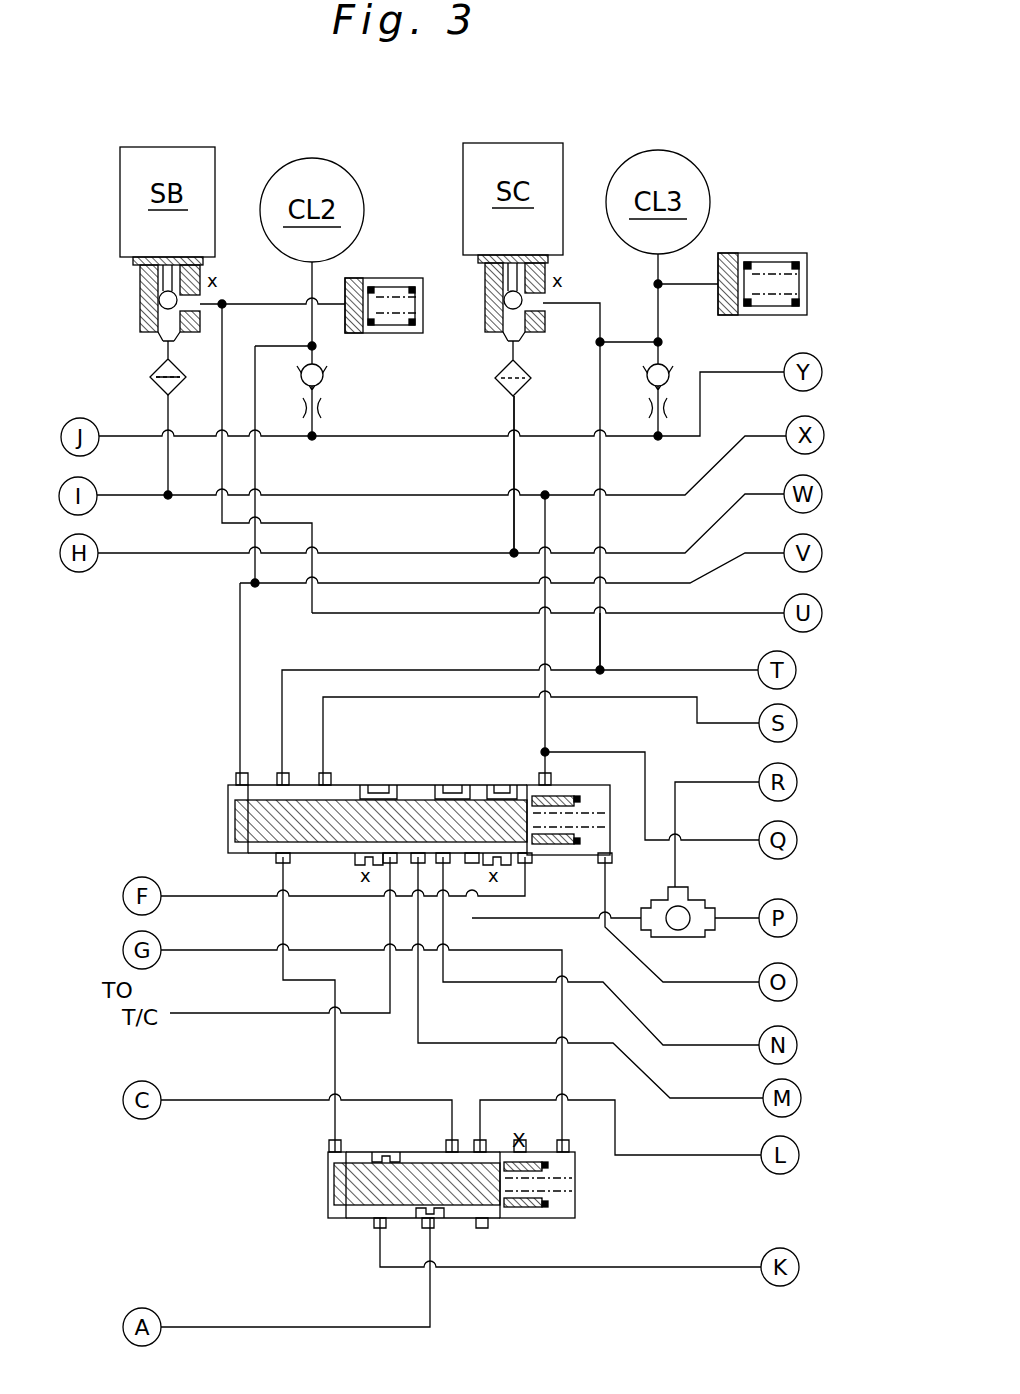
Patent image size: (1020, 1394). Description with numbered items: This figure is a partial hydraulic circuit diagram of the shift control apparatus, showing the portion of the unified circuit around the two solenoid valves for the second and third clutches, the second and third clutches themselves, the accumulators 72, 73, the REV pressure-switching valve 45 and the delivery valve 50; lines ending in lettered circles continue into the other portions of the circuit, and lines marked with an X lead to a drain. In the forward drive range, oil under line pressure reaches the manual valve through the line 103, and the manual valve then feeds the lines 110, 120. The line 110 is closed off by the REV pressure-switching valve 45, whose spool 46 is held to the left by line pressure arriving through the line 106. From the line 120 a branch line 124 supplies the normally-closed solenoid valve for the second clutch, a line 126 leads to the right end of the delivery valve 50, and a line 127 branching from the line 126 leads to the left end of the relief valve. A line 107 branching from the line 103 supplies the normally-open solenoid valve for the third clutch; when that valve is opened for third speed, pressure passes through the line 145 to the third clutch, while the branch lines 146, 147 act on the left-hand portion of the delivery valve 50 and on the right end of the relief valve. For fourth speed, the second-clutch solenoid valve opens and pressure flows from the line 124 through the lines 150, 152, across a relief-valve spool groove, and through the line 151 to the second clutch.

The REV pressure-switching valve 45 is at (495, 1200).
The spool 46 is at (482, 1207).
The delivery valve 50 is at (210, 812).
The accumulator 72 is at (389, 278).
The accumulator 73 is at (771, 253).
The line 103 is at (368, 552).
The line 106 is at (202, 952).
The line 107 is at (515, 462).
The line 110 is at (671, 1153).
The line 120 is at (357, 493).
The line 124 is at (165, 412).
The line 126 is at (545, 732).
The line 127 is at (608, 750).
The line 145 is at (569, 303).
The line 146 is at (443, 668).
The line 147 is at (648, 668).
The line 150 is at (223, 368).
The line 151 is at (728, 563).
The line 152 is at (338, 615).